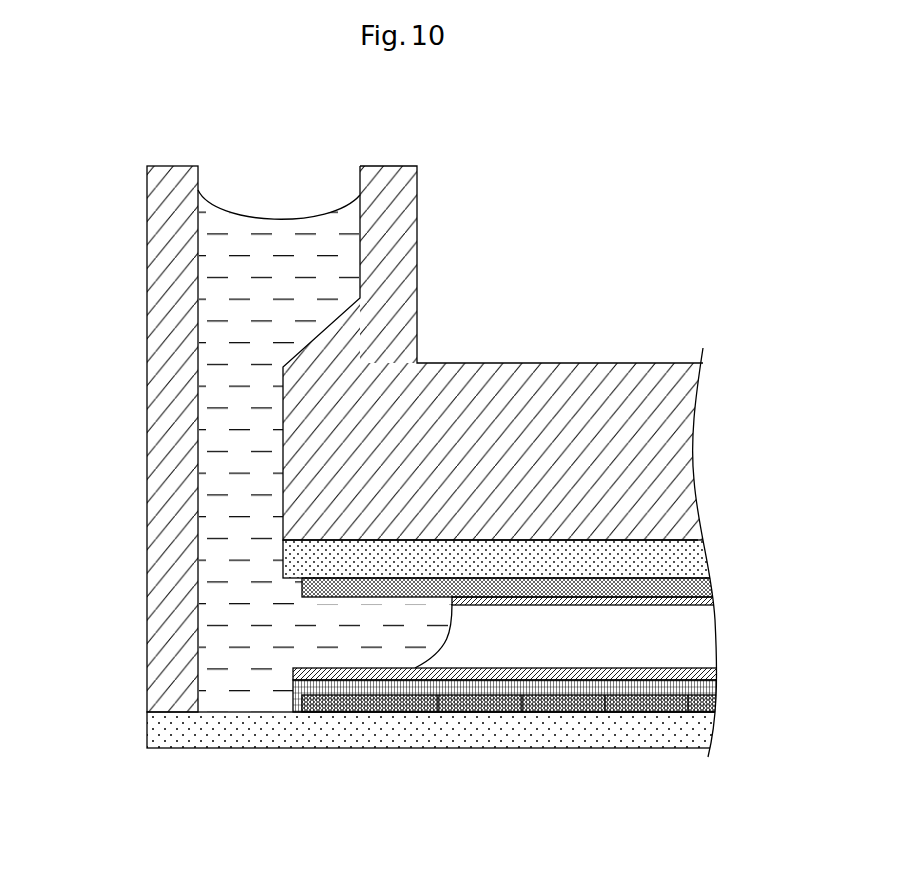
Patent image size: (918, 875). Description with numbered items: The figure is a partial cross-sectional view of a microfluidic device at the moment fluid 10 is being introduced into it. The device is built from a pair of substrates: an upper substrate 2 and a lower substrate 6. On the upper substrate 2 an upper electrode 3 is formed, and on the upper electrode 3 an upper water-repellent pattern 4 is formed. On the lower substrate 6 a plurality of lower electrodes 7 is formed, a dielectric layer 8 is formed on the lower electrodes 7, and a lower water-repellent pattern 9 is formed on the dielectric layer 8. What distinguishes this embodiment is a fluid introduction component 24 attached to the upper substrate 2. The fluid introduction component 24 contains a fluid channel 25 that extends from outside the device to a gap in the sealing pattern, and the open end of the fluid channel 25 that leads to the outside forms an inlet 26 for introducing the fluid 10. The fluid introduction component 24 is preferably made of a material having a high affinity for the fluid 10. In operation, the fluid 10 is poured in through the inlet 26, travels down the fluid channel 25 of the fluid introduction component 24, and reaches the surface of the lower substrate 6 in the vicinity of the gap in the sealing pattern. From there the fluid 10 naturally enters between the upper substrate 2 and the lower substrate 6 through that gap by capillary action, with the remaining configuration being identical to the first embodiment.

The fluid 10 is at (692, 298).
The fluid introduction component 24 is at (421, 194).
The fluid channel 25 is at (198, 570).
The inlet 26 is at (360, 179).
The upper substrate 2 is at (688, 560).
The upper electrode 3 is at (693, 588).
The upper water-repellent pattern 4 is at (693, 603).
The lower substrate 6 is at (362, 730).
The lower electrodes 7 is at (650, 706).
The dielectric layer 8 is at (577, 690).
The lower water-repellent pattern 9 is at (481, 678).